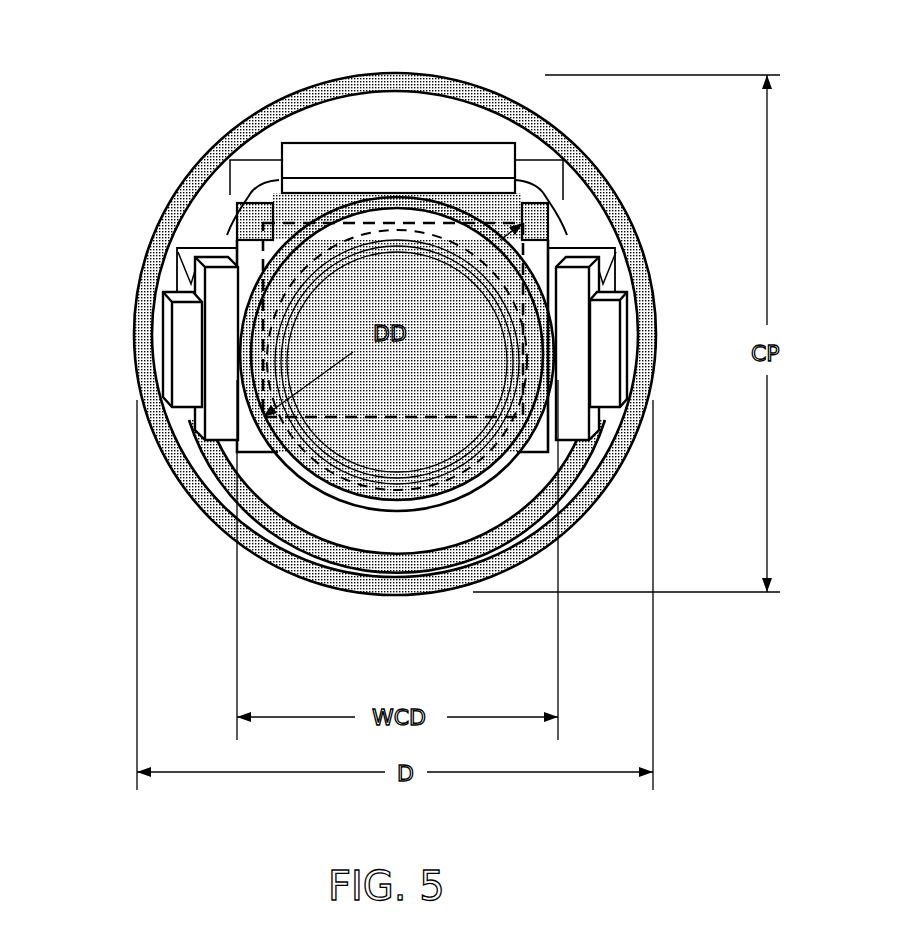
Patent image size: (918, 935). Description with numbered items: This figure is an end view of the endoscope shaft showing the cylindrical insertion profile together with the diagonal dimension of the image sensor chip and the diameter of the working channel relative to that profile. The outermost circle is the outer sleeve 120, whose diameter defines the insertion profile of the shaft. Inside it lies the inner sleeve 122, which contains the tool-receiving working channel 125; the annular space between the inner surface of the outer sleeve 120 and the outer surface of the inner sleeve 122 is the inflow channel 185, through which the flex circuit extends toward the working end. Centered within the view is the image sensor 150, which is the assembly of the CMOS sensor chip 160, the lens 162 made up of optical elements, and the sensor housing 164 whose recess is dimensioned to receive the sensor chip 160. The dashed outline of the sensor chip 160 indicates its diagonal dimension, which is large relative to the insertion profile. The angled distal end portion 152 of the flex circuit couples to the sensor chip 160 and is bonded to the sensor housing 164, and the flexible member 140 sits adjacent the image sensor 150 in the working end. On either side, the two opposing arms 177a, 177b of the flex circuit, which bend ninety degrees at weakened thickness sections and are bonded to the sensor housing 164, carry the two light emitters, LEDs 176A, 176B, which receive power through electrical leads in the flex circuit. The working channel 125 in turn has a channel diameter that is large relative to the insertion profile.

The outer sleeve 120 is at (183, 193).
The inflow channel 185 is at (315, 127).
The inner sleeve 122 is at (317, 540).
The working channel 125 is at (380, 525).
The image sensor 150 is at (573, 200).
The distal end portion of flex circuit 152 is at (260, 195).
The flexible member 140 is at (502, 155).
The sensor housing 164 is at (420, 303).
The CMOS sensor chip 160 is at (408, 418).
The lens 162 is at (448, 438).
The first arm of flex circuit 177a is at (182, 282).
The second arm of flex circuit 177b is at (607, 275).
The LED 176A is at (180, 353).
The LED 176B is at (612, 342).